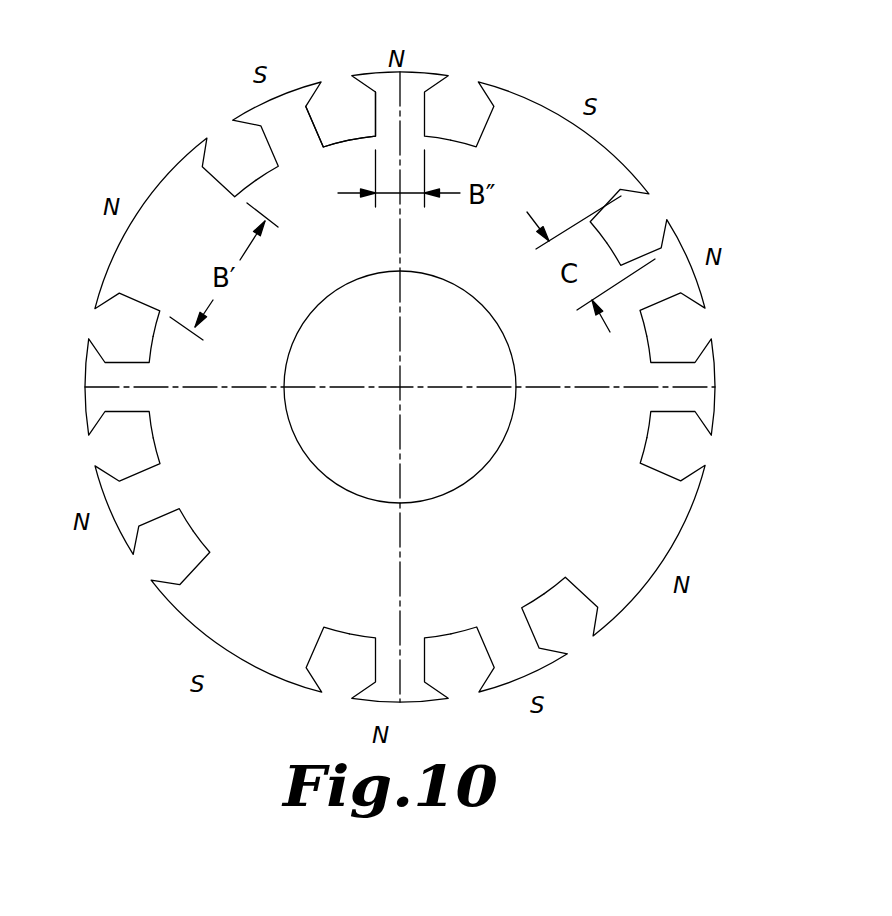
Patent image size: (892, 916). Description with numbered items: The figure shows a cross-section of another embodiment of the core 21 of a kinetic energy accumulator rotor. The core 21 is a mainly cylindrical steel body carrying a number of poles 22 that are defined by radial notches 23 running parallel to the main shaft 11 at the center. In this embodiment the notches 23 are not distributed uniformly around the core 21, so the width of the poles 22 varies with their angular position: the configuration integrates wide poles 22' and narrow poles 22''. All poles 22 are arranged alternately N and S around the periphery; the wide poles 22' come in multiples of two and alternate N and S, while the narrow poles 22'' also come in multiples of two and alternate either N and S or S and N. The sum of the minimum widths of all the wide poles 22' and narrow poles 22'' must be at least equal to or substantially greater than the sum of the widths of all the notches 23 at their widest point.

The main shaft 11 is at (490, 365).
The core 21 is at (228, 613).
The poles 22 is at (255, 107).
The wide poles 22' is at (360, 209).
The narrow poles 22'' is at (569, 172).
The notches 23 is at (337, 123).